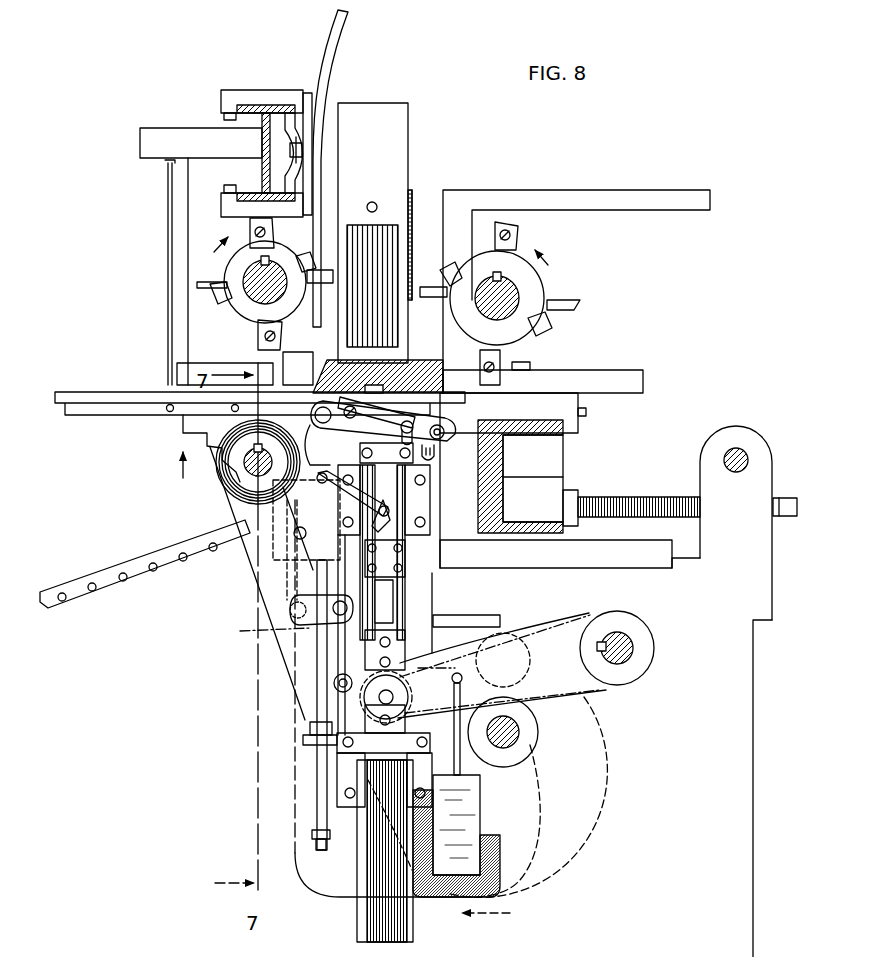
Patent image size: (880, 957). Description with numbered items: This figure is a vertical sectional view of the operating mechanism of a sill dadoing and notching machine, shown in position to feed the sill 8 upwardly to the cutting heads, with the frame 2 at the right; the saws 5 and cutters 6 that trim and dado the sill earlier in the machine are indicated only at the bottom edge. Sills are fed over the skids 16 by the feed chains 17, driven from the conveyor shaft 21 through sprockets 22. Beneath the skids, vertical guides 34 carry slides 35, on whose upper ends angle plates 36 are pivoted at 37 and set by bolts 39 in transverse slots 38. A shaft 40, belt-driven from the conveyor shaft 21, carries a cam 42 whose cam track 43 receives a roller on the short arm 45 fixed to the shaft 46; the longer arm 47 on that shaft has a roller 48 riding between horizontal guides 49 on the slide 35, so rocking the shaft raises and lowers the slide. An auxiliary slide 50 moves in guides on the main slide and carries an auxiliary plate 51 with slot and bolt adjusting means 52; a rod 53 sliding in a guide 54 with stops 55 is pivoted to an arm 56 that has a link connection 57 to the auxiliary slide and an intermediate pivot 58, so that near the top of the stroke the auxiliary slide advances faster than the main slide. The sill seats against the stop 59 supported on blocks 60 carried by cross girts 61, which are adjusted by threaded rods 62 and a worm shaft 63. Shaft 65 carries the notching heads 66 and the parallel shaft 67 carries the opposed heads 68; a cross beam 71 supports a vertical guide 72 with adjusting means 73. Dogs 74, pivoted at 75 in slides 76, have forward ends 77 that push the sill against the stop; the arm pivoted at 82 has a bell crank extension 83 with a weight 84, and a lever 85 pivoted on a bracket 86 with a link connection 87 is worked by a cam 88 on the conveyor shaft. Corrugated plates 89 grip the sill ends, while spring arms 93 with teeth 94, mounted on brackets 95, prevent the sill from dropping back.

The frame 2 is at (755, 725).
The saws 5 is at (235, 955).
The cutters 6 is at (215, 955).
The sill 8 is at (330, 372).
The skids 16 is at (86, 390).
The feed chains 17 is at (72, 580).
The conveyor shaft 21 is at (250, 464).
The sprockets 22 is at (216, 490).
The guides 34 is at (436, 601).
The slides 35 is at (410, 930).
The angle plates 36 is at (468, 410).
The pivot 37 is at (322, 423).
The transverse slots 38 is at (435, 452).
The bolts 39 is at (444, 436).
The shaft 40 is at (518, 736).
The cam 42 is at (410, 895).
The cam track 43 is at (496, 876).
The short arm 45 is at (568, 612).
The shaft 46 is at (628, 648).
The longer arm 47 is at (592, 700).
The roller 48 is at (378, 703).
The horizontal guides 49 is at (340, 676).
The auxiliary slide 50 is at (390, 598).
The auxiliary plate 51 is at (394, 416).
The slot and bolt adjusting means 52 is at (412, 422).
The rod 53 is at (322, 650).
The guide 54 is at (308, 738).
The stops 55 is at (312, 728).
The arm 56 is at (296, 582).
The link connection 57 is at (387, 518).
The intermediate pivot 58 is at (276, 552).
The stop 59 is at (512, 194).
The blocks 60 is at (576, 393).
The cross girts 61 is at (538, 452).
The threaded rods 62 is at (635, 497).
The worm shaft 63 is at (740, 452).
The shaft 65 is at (510, 296).
The notching or cutting heads 66 is at (544, 290).
The shaft 67 is at (246, 280).
The notching or cutting heads 68 is at (234, 264).
The cross beam 71 is at (262, 168).
The vertical guide 72 is at (337, 52).
The adjusting means 73 is at (302, 150).
The dogs 74 is at (198, 396).
The pivot 75 is at (236, 408).
The slides 76 is at (92, 408).
The forward ends 77 is at (275, 393).
The pivot 82 is at (362, 697).
The bell crank extension 83 is at (272, 543).
The weight 84 is at (470, 846).
The lever 85 is at (243, 540).
The bracket 86 is at (318, 600).
The link connection 87 is at (262, 637).
The cam 88 is at (206, 440).
The corrugated plates 89 is at (374, 245).
The arms 93 is at (411, 245).
The teeth 94 is at (411, 192).
The brackets 95 is at (409, 138).